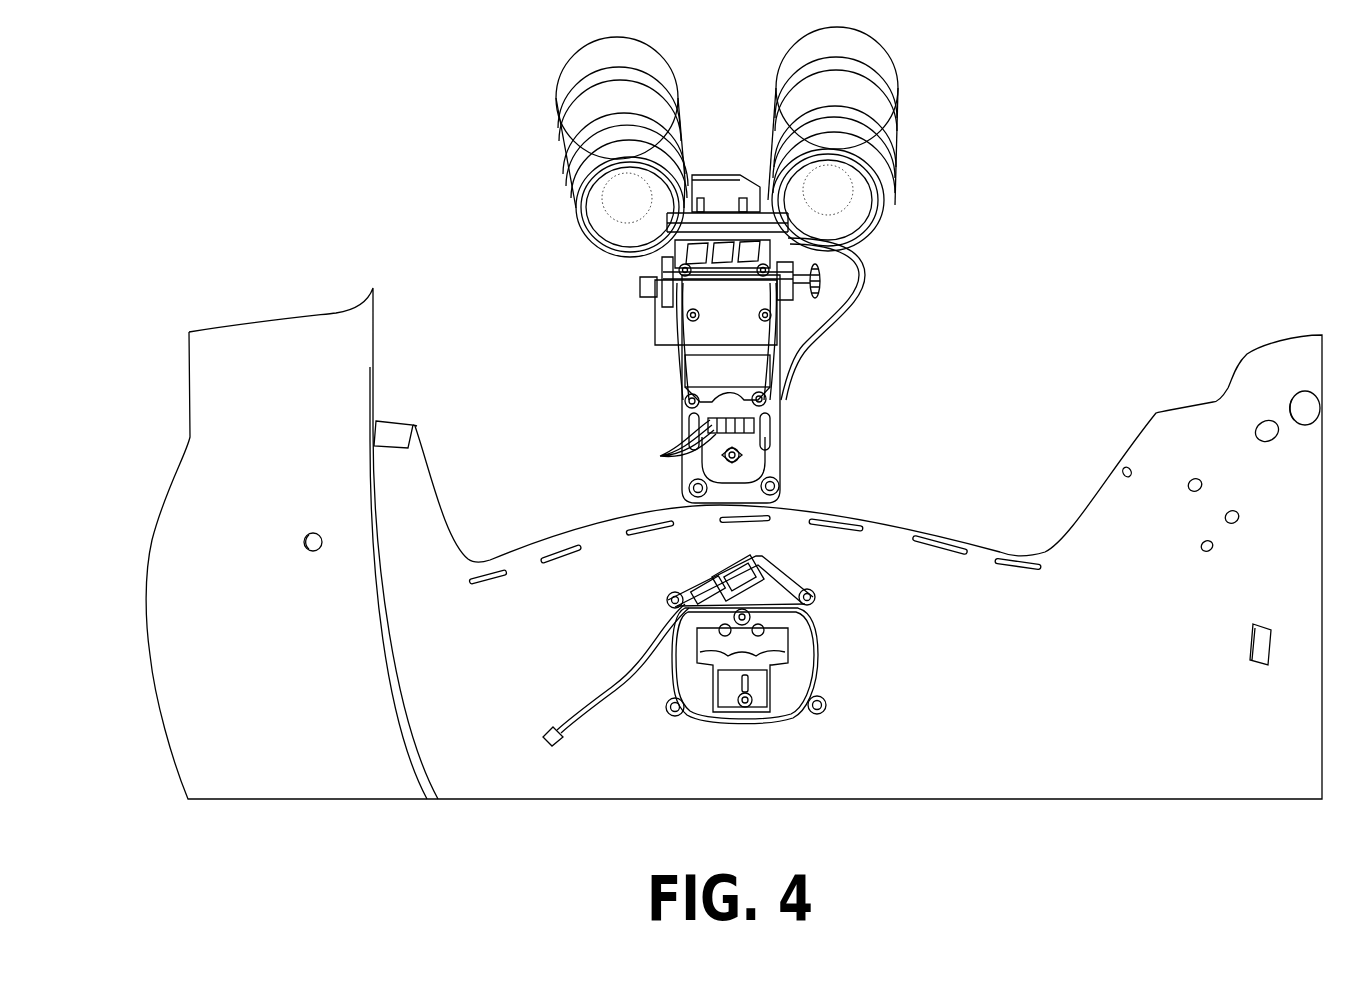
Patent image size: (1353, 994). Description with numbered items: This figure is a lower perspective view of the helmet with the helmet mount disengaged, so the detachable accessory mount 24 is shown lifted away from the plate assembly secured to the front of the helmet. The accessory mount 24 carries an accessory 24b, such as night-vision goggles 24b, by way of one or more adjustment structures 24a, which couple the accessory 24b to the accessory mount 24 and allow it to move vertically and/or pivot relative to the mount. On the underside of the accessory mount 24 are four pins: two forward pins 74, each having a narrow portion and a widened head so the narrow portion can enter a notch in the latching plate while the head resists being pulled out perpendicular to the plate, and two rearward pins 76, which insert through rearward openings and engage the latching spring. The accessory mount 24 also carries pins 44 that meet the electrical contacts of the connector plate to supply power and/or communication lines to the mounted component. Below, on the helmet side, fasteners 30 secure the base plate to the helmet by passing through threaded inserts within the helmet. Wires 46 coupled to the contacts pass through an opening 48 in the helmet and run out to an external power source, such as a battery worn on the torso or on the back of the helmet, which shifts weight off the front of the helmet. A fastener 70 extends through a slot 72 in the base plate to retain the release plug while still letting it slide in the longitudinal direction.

The accessory mount 24 is at (782, 441).
The adjustment structures 24a is at (661, 346).
The accessory 24b is at (569, 141).
The fasteners 30 is at (668, 596).
The pins 44 is at (660, 456).
The wires 46 is at (585, 700).
The opening 48 is at (815, 650).
The fastener 70 is at (750, 704).
The slot 72 is at (752, 683).
The forward pins 74 is at (690, 398).
The rearward pins 76 is at (690, 497).